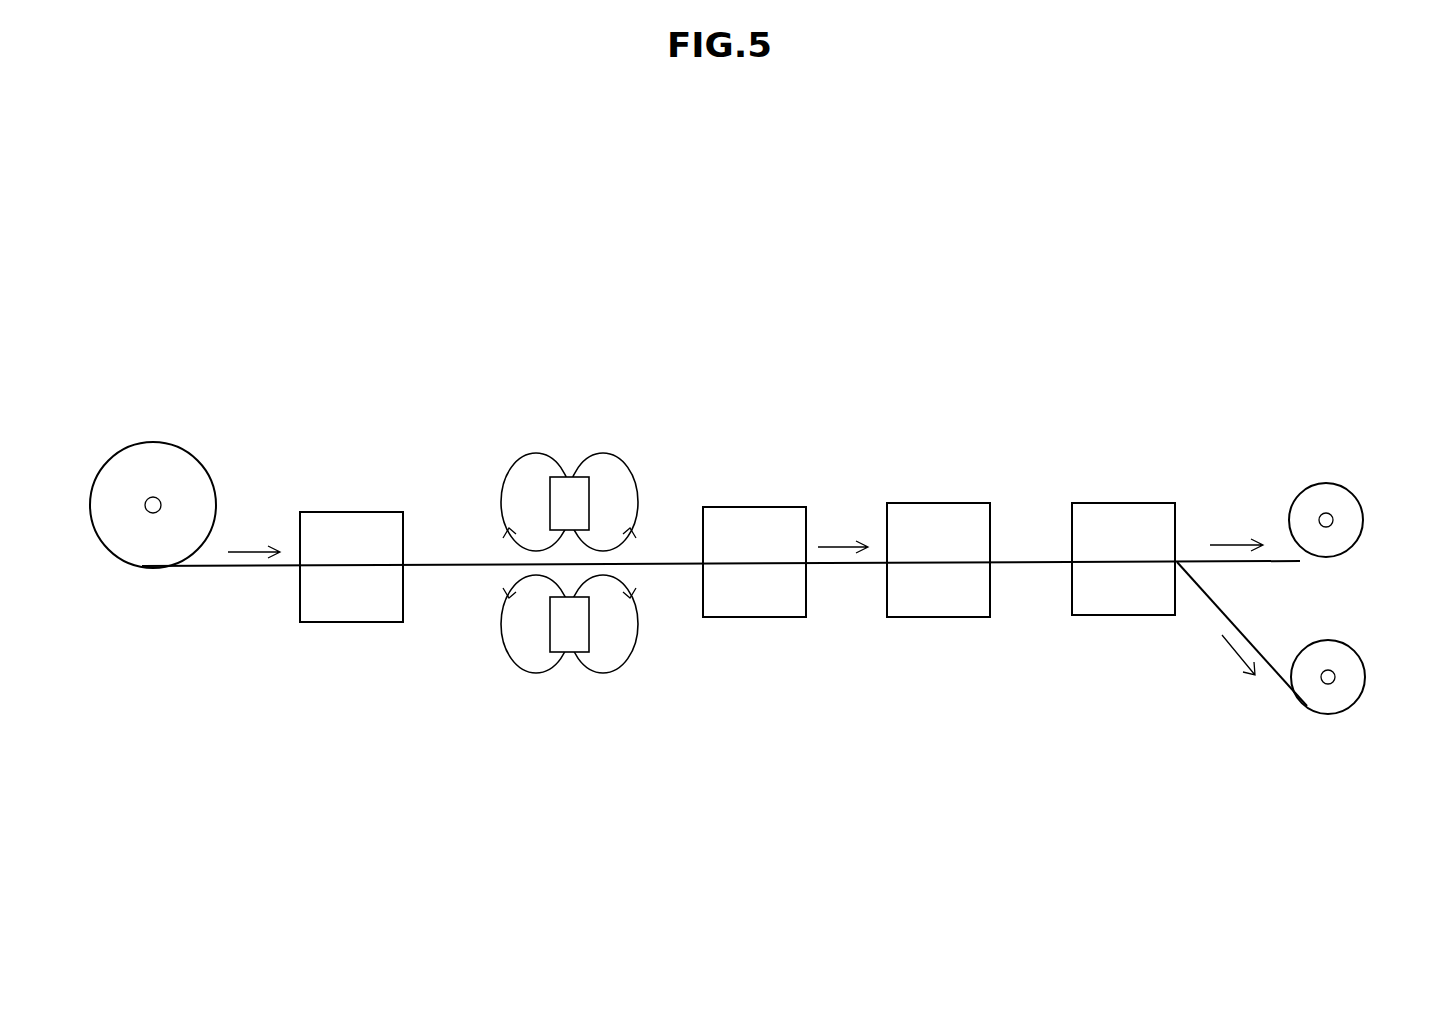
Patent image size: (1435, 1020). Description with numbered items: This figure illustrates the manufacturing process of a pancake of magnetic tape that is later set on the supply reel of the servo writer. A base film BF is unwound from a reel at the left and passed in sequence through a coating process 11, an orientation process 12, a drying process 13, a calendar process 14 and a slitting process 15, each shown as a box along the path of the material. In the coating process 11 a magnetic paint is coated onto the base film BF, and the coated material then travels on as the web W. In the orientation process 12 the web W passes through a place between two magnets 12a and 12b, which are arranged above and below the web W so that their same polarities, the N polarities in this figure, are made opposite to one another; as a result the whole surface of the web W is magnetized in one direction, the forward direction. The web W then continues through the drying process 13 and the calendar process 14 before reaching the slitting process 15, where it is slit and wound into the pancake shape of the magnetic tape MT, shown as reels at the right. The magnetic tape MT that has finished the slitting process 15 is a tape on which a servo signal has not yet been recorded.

The base film BF is at (130, 442).
The web W is at (430, 564).
The coating process 11 is at (335, 512).
The orientation process 12 is at (634, 528).
The magnet 12a is at (589, 487).
The magnet 12b is at (589, 640).
The drying process 13 is at (730, 507).
The calendar process 14 is at (922, 503).
The slitting process 15 is at (1102, 503).
The magnetic tape MT is at (1273, 780).